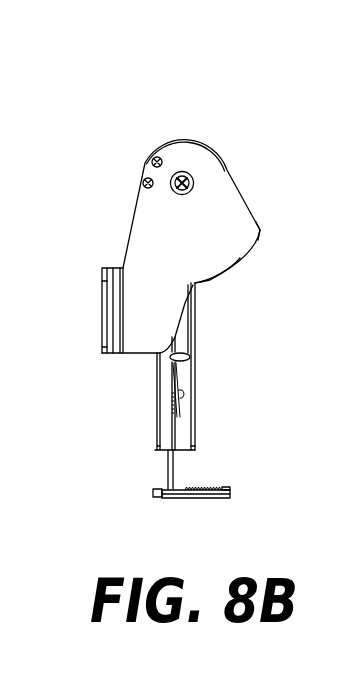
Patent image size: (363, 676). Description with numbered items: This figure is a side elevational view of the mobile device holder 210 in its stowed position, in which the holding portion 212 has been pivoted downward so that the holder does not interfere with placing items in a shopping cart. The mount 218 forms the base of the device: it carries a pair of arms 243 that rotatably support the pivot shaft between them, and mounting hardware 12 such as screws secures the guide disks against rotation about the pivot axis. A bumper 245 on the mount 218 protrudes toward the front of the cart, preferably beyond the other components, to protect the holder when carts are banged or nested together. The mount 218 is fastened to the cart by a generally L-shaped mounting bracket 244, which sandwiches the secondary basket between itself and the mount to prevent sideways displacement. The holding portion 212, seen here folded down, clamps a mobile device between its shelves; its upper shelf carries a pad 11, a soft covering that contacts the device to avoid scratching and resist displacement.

The mobile device holder 210 is at (226, 141).
The mount 218 is at (112, 220).
The mounting hardware 12 is at (140, 186).
The mounting bracket 244 is at (103, 302).
The bumper 245 is at (262, 232).
The arms 243 is at (217, 247).
The holding portion 212 is at (200, 406).
The pad 11 is at (218, 488).